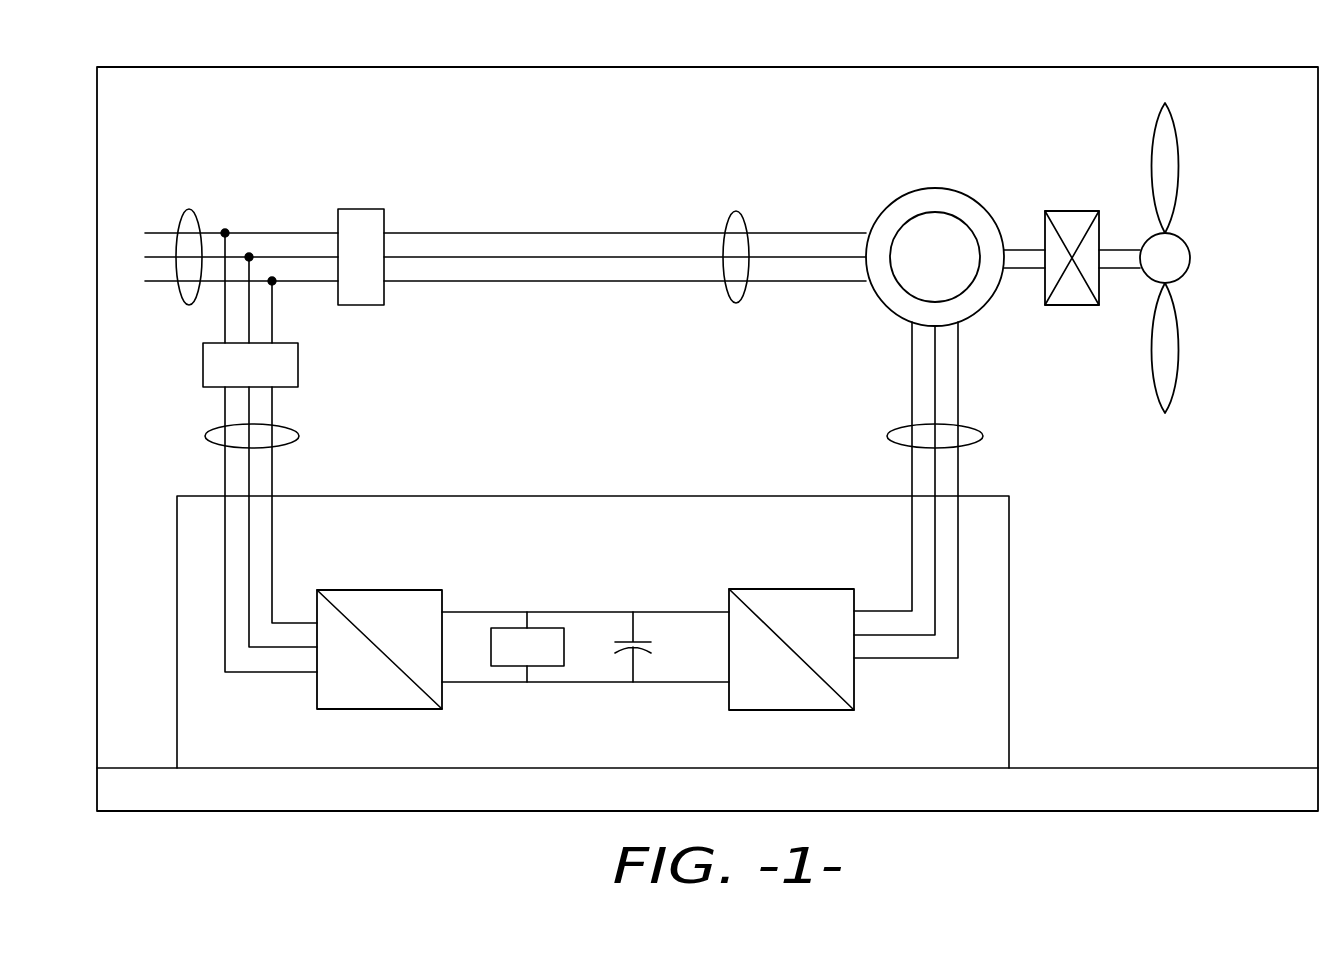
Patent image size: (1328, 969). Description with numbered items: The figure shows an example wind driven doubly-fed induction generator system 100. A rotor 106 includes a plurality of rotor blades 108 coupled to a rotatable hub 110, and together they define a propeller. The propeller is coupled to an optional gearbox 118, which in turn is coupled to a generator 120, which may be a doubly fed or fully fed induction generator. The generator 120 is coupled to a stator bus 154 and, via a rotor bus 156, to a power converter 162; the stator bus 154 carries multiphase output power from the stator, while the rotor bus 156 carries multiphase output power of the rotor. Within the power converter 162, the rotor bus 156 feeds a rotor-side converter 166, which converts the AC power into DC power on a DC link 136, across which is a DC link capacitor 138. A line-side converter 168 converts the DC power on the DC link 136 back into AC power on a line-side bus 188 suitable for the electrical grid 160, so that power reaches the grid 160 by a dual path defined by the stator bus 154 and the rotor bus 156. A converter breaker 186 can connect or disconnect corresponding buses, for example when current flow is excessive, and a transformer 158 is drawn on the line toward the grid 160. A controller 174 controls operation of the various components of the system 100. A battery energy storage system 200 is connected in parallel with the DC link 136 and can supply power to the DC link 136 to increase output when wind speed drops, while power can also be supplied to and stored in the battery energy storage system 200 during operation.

The wind driven doubly-fed induction generator system 100 is at (535, 175).
The rotor 106 is at (1201, 262).
The rotor blades 108 is at (1180, 182).
The rotatable hub 110 is at (1192, 252).
The gearbox 118 is at (1072, 211).
The generator 120 is at (930, 188).
The DC link 136 is at (643, 610).
The DC link capacitor 138 is at (623, 640).
The stator bus 154 is at (736, 211).
The rotor bus 156 is at (986, 435).
The transformer 158 is at (358, 209).
The electrical grid 160 is at (189, 209).
The power converter 162 is at (1009, 598).
The rotor-side converter 166 is at (854, 684).
The line-side converter 168 is at (317, 685).
The controller 174 is at (1072, 768).
The converter breaker 186 is at (203, 368).
The line-side bus 188 is at (207, 443).
The battery energy storage system 200 is at (503, 628).